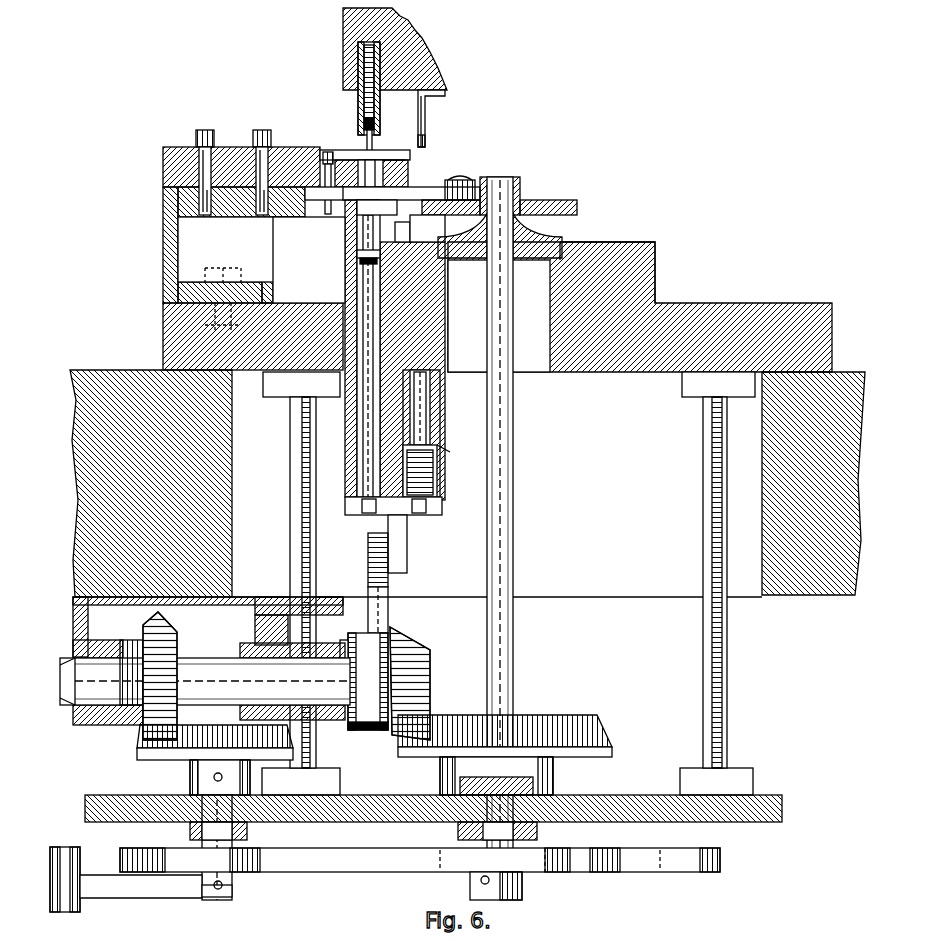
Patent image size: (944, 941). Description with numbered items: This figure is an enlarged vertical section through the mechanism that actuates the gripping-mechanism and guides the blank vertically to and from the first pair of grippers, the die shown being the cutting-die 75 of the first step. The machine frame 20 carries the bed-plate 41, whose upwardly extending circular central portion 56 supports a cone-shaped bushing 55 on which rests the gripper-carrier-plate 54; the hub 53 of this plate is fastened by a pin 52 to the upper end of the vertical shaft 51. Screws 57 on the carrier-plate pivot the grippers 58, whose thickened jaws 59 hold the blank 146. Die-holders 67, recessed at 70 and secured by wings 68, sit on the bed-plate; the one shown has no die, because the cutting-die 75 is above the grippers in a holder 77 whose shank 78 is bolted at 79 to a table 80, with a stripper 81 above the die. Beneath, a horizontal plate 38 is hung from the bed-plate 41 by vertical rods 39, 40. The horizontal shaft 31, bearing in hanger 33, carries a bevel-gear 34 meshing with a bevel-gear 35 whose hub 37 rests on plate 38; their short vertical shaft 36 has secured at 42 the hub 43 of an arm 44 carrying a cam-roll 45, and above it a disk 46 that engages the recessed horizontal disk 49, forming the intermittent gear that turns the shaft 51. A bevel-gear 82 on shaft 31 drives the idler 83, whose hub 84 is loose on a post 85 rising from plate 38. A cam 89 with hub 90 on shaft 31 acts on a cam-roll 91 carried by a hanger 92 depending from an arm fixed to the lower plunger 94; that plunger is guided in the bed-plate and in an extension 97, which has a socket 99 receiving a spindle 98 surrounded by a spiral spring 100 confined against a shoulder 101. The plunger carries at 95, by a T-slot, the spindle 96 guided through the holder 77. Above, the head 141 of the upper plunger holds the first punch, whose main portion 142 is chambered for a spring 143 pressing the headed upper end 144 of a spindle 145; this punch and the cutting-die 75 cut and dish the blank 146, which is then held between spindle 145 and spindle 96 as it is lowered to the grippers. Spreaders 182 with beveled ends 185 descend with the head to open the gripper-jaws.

The head 141 is at (398, 22).
The main portion of the first punch 142 is at (358, 103).
The spring 143 is at (364, 66).
The headed upper end 144 is at (364, 118).
The spindle 145 is at (380, 138).
The blank 146 is at (370, 190).
The spreaders 182 is at (425, 113).
The beveled end 185 is at (425, 142).
The stripper 81 is at (405, 160).
The cutting-die 75 is at (350, 165).
The bolts 79 is at (210, 120).
The shank 78 is at (163, 175).
The table 80 is at (163, 210).
The holder 77 is at (318, 200).
The jaws 59 is at (357, 212).
The die-holders 67 is at (345, 228).
The spindle 96 is at (380, 262).
The T-slot connection 95 is at (357, 281).
The recess 70 is at (396, 213).
The wings 68 is at (410, 235).
The grippers 58 is at (430, 187).
The screws 57 is at (460, 180).
The hub 53 is at (505, 177).
The pin 52 is at (520, 190).
The gripper-carrier-plate 54 is at (577, 202).
The cone-shaped bushing 55 is at (550, 235).
The central portion of the bed-plate 56 is at (660, 245).
The bed-plate 41 is at (163, 342).
The frame 20 is at (95, 350).
The spindle 98 is at (430, 392).
The extension 97 is at (440, 420).
The socket 99 is at (437, 445).
The spiral spring 100 is at (433, 473).
The shoulder 101 is at (440, 448).
The plunger 94 is at (345, 455).
The vertical shaft 51 is at (513, 533).
The hub 43 is at (232, 892).
The vertical rod 40 is at (316, 553).
The vertical bar or hanger 92 is at (407, 540).
The cam-roll 91 is at (368, 568).
The vertical rod 39 is at (703, 552).
The hub 90 is at (352, 635).
The cam 89 is at (388, 608).
The bevel-gear 82 is at (430, 650).
The horizontal shaft 31 is at (205, 658).
The hanger or box 33 is at (255, 643).
The horizontal bevel-gear or idler 83 is at (540, 715).
The hub 84 is at (553, 767).
The post 85 is at (533, 785).
The bevel-gear 34 is at (143, 735).
The bevel-gear 35 is at (160, 760).
The hub 37 is at (190, 780).
The horizontal plate 38 is at (380, 795).
The cam-roll 45 is at (80, 853).
The disk or circular plate 46 is at (140, 848).
The short vertical shaft or stud 36 is at (202, 833).
The arm 44 is at (150, 898).
The securing point 42 is at (205, 897).
The horizontal disk 49 is at (430, 872).